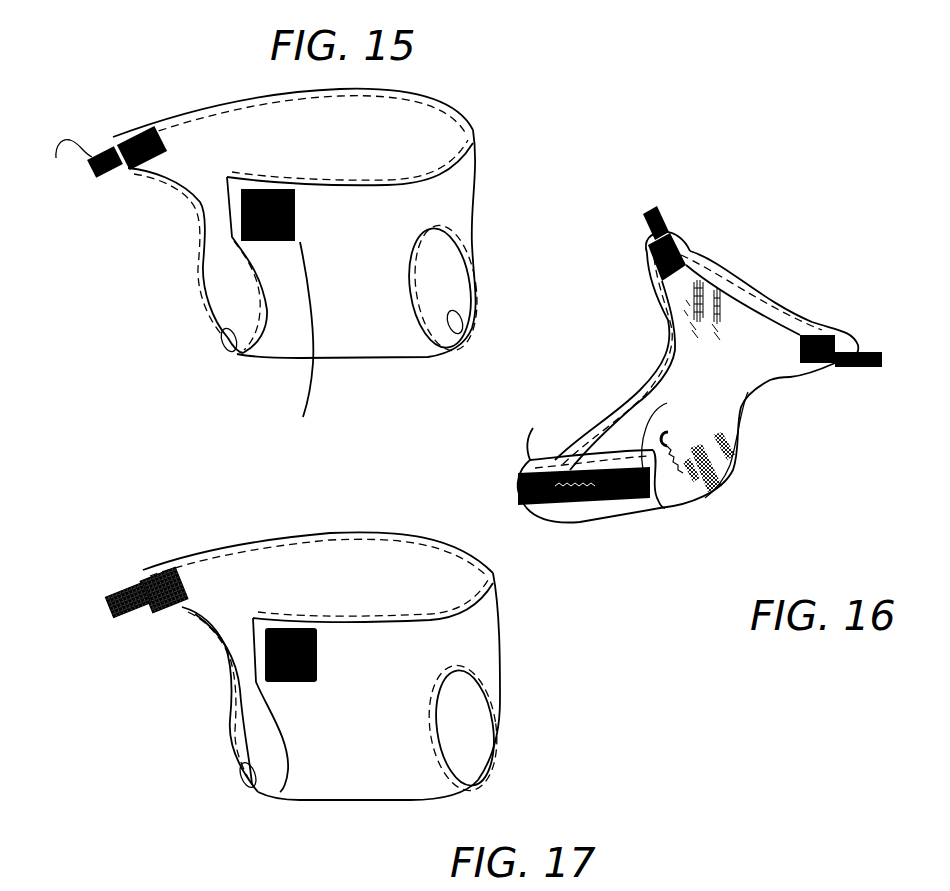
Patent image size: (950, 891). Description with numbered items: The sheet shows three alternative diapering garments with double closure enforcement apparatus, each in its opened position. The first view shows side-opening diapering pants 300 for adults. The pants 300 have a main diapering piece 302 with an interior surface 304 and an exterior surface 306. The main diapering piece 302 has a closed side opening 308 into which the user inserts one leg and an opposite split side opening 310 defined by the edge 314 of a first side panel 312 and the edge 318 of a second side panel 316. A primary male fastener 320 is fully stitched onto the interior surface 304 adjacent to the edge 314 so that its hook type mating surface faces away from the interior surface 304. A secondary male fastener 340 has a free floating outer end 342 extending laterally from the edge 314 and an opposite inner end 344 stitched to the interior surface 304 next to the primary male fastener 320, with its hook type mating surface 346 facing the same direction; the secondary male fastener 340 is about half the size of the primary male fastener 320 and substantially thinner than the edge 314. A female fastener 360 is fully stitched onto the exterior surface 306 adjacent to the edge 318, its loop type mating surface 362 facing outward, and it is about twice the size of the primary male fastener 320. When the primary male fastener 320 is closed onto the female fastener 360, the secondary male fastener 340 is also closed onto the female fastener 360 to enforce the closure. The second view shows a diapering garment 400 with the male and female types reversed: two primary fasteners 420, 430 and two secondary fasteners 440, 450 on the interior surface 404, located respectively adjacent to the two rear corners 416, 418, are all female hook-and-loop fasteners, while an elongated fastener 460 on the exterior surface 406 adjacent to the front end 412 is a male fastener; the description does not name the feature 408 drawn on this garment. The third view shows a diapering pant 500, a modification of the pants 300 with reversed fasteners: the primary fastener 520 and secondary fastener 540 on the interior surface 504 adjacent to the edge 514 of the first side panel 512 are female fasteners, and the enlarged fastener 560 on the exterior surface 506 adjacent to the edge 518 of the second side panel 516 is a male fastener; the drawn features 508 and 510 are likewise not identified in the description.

In FIG. 15, the side-opening diapering pants 300 is at (375, 412).
In FIG. 15, the main diapering piece 302 is at (227, 123).
In FIG. 15, the interior surface 304 is at (397, 147).
In FIG. 15, the exterior surface 306 is at (370, 310).
In FIG. 15, the closed side opening 308 is at (447, 333).
In FIG. 15, the split side opening 310 is at (243, 354).
In FIG. 15, the first side panel 312 is at (162, 167).
In FIG. 15, the edge of first side panel 314 is at (140, 173).
In FIG. 15, the second side panel 316 is at (287, 273).
In FIG. 15, the edge of second side panel 318 is at (240, 210).
In FIG. 15, the primary male fastener 320 is at (145, 130).
In FIG. 15, the secondary male fastener 340 is at (92, 182).
In FIG. 15, the free floating outer end 342 is at (80, 159).
In FIG. 15, the inner end 344 is at (116, 146).
In FIG. 15, the hook type mating surface 346 is at (107, 170).
In FIG. 15, the female fastener 360 is at (279, 309).
In FIG. 15, the loop type mating surface 362 is at (297, 215).
In FIG. 16, the diapering garment 400 is at (617, 213).
In FIG. 16, the interior surface 404 is at (718, 398).
In FIG. 16, the exterior surface 406 is at (610, 510).
In FIG. 16, the end portion 408 is at (740, 460).
In FIG. 16, the front end 412 is at (688, 440).
In FIG. 16, the rear corner 416 is at (672, 287).
In FIG. 16, the rear corner 418 is at (790, 353).
In FIG. 16, the primary fastener 420 is at (688, 247).
In FIG. 16, the primary fastener 430 is at (823, 336).
In FIG. 16, the secondary fastener 440 is at (662, 215).
In FIG. 16, the secondary fastener 450 is at (870, 352).
In FIG. 16, the elongated fastener 460 is at (570, 503).
In FIG. 17, the diapering pant 500 is at (133, 804).
In FIG. 17, the interior surface 504 is at (230, 587).
In FIG. 17, the exterior surface 506 is at (360, 773).
In FIG. 17, the leg opening 508 is at (440, 743).
In FIG. 17, the tab 510 is at (258, 792).
In FIG. 17, the first side panel 512 is at (193, 603).
In FIG. 17, the edge of first side panel 514 is at (143, 610).
In FIG. 17, the second side panel 516 is at (297, 690).
In FIG. 17, the edge of second side panel 518 is at (250, 630).
In FIG. 17, the primary fastener 520 is at (155, 573).
In FIG. 17, the secondary fastener 540 is at (123, 587).
In FIG. 17, the enlarged fastener 560 is at (320, 643).